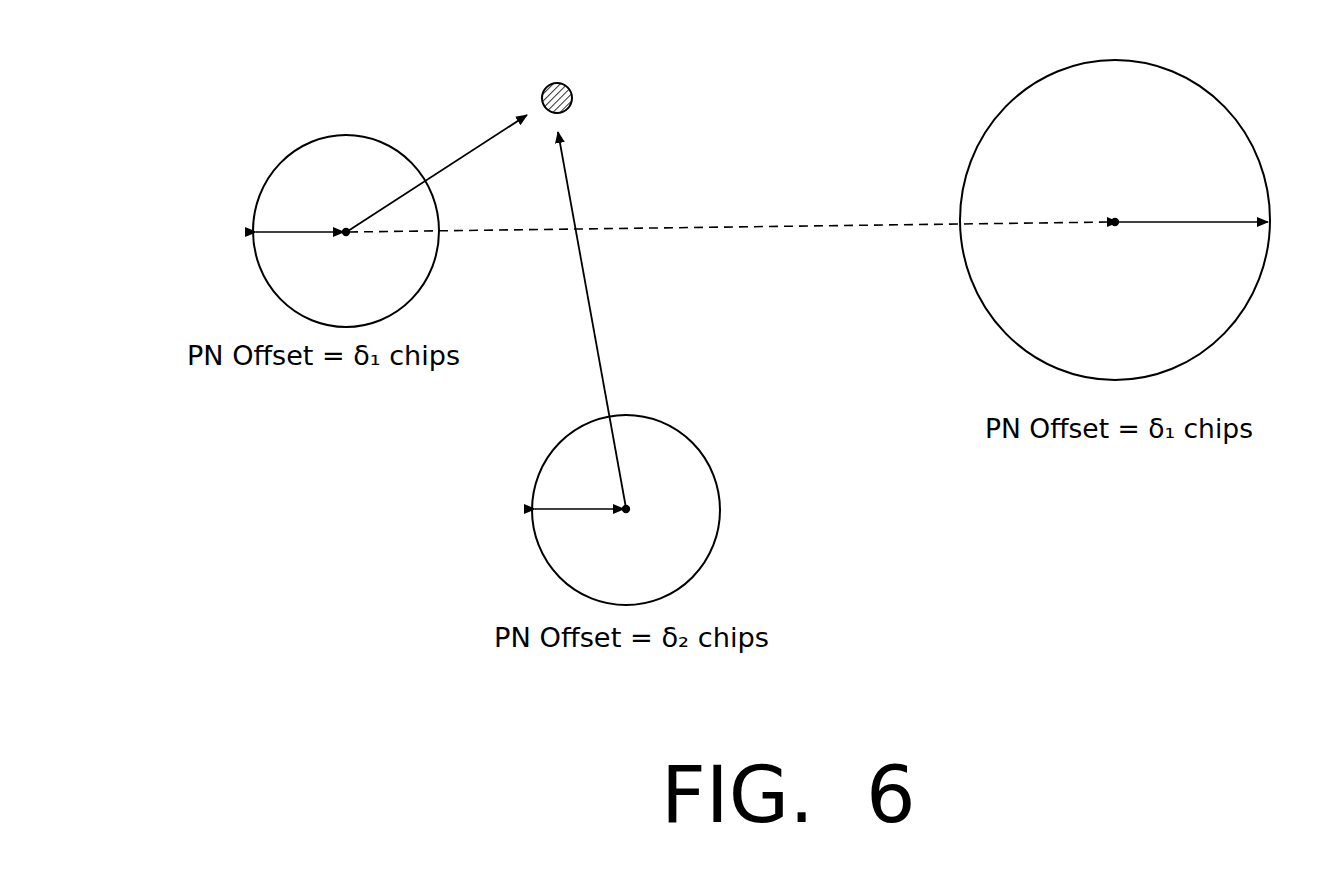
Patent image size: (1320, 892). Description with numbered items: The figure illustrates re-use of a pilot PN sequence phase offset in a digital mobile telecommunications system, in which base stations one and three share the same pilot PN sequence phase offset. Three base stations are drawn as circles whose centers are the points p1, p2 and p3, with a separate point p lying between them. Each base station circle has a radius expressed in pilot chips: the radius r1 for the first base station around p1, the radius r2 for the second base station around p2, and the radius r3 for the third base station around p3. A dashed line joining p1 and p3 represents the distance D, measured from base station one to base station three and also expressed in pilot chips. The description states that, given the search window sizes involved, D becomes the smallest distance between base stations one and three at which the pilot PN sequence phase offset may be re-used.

The center of first cell p1 is at (346, 231).
The center of second cell p2 is at (626, 510).
The center of third cell p3 is at (1115, 220).
The mobile station position p is at (557, 78).
The radius of base station 1 r1 is at (319, 205).
The radius of base station 2 r2 is at (607, 535).
The radius of base station 3 r3 is at (1171, 251).
The distance between base station 1 and base station 3 D is at (730, 212).